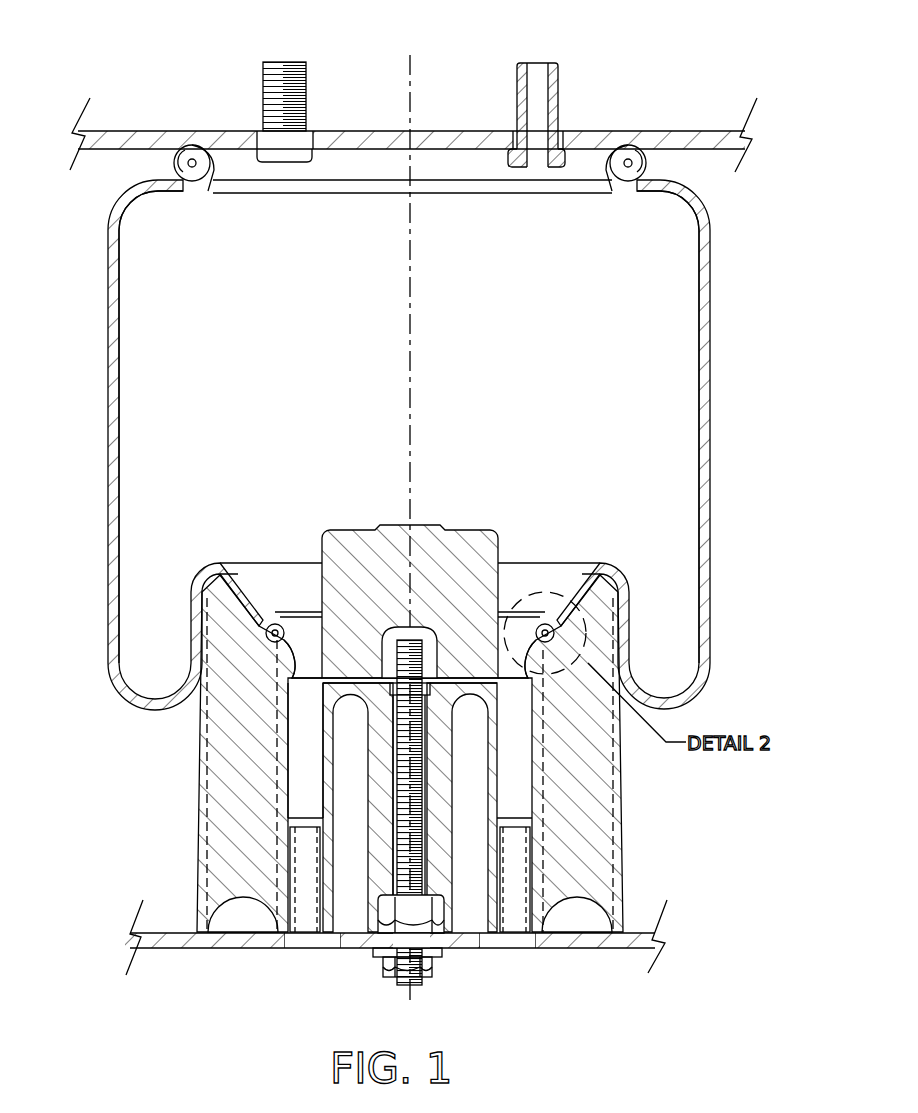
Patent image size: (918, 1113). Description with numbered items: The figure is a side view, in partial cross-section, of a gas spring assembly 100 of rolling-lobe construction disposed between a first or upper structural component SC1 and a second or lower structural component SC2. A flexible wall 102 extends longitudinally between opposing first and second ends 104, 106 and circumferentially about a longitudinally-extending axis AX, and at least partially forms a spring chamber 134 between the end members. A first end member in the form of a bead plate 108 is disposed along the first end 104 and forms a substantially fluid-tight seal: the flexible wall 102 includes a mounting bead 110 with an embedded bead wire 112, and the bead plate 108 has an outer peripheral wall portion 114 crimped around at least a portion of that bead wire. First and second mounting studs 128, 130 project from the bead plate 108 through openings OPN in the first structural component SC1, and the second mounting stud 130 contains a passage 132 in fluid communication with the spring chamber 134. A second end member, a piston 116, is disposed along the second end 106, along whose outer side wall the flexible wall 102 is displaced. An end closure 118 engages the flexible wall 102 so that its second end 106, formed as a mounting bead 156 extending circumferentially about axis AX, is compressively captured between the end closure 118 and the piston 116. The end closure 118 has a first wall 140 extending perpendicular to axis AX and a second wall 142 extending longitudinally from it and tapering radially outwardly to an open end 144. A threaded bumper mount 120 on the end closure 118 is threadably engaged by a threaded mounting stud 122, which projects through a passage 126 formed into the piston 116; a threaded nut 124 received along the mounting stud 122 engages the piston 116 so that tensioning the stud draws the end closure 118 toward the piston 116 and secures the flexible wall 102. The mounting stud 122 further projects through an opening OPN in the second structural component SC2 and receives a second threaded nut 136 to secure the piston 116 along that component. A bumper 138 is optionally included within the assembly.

The gas spring assembly 100 is at (423, 374).
The flexible wall 102 is at (740, 430).
The first end 104 is at (356, 210).
The second end 106 is at (453, 605).
The bead plate 108 is at (423, 165).
The mounting bead 110 is at (198, 160).
The bead wire 112 is at (210, 190).
The outer peripheral wall portion 114 is at (650, 163).
The piston 116 is at (350, 753).
The end closure 118 is at (401, 577).
The threaded bumper mount 120 is at (498, 566).
The threaded mounting stud 122 is at (423, 781).
The threaded nut 124 is at (390, 910).
The passage 126 is at (423, 848).
The first mounting stud 128 is at (305, 66).
The second mounting stud 130 is at (560, 110).
The passage 132 is at (537, 96).
The spring chamber 134 is at (145, 437).
The second threaded nut 136 is at (387, 968).
The bumper 138 is at (445, 527).
The first wall 140 is at (333, 690).
The second wall 142 is at (275, 648).
The open end 144 is at (540, 604).
The mounting bead 156 is at (571, 635).
The longitudinally-extending axis AX is at (418, 352).
The opening OPN is at (315, 140).
The first structural component SC1 is at (632, 138).
The second structural component SC2 is at (260, 943).